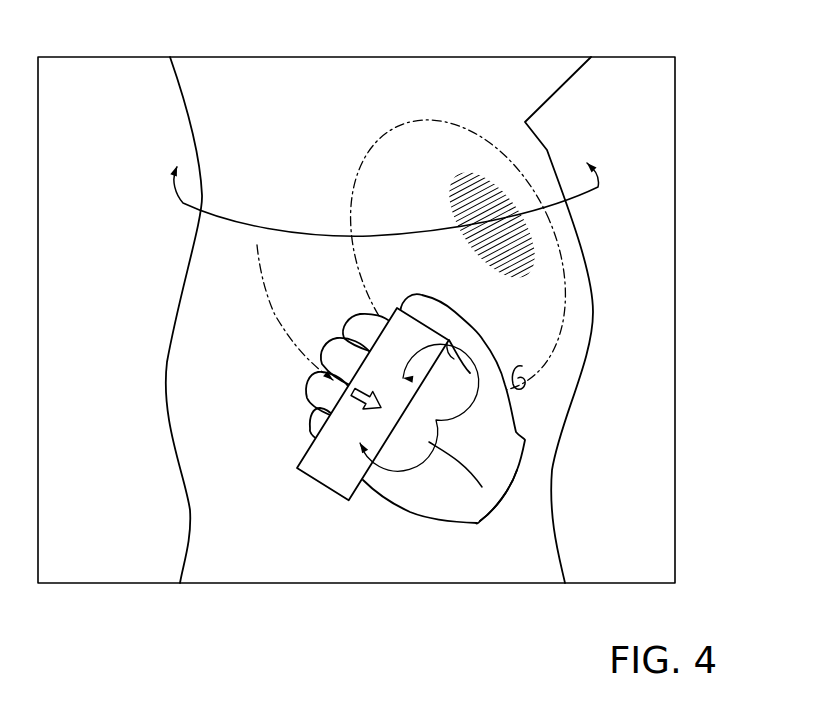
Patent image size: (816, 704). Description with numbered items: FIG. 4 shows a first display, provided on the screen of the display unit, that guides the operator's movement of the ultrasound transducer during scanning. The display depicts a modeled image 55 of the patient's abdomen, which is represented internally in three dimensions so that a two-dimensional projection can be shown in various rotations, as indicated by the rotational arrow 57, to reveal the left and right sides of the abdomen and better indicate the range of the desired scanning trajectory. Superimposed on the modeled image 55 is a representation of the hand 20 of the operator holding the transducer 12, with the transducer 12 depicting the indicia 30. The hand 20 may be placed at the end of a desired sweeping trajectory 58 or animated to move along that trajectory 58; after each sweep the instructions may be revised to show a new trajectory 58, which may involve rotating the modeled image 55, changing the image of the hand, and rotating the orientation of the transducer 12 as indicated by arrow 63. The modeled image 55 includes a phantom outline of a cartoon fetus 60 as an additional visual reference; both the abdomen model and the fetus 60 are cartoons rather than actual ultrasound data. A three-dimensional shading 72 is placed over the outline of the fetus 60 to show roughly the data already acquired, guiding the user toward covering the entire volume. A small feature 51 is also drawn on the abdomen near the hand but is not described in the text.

The transducer 12 is at (330, 493).
The hand 20 is at (415, 498).
The indicia 30 is at (350, 410).
The navel 51 is at (586, 357).
The modeled image 55 is at (449, 320).
The rotational arrow 57 is at (183, 203).
The desired sweeping trajectory 58 is at (275, 318).
The cartoon fetus 60 is at (486, 143).
The arrow 63 is at (482, 487).
The three-dimensional shading 72 is at (530, 250).